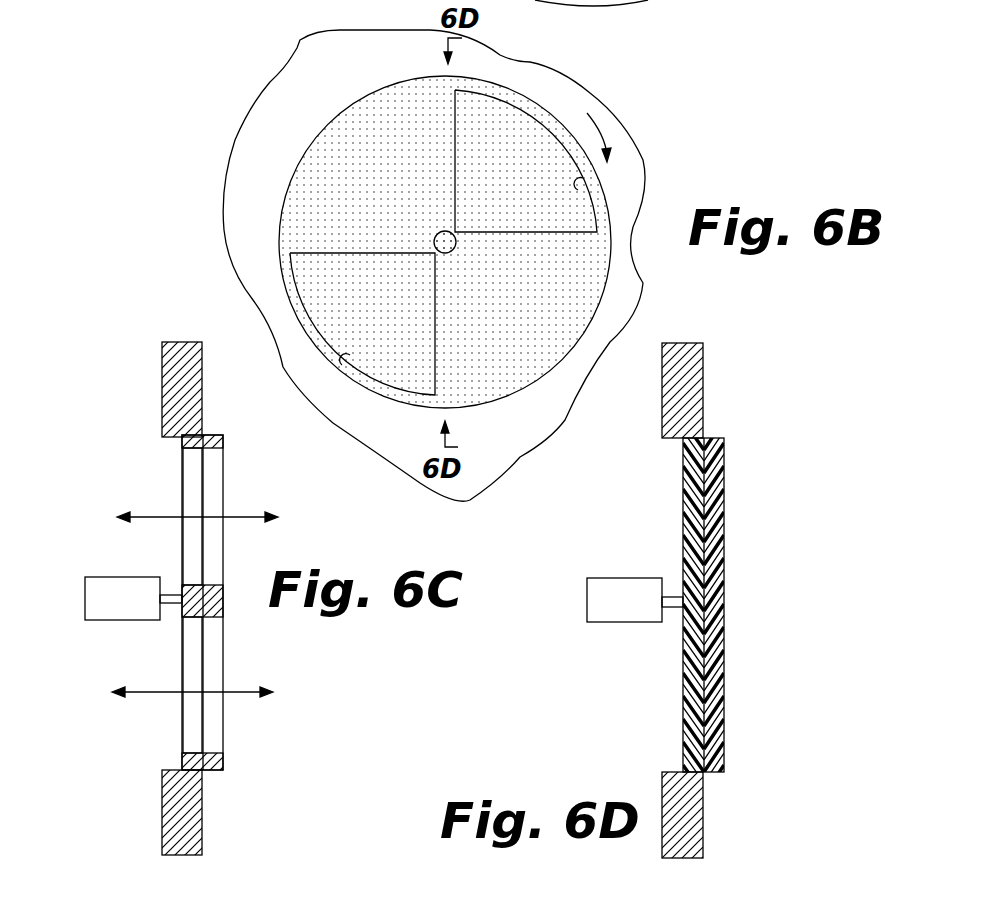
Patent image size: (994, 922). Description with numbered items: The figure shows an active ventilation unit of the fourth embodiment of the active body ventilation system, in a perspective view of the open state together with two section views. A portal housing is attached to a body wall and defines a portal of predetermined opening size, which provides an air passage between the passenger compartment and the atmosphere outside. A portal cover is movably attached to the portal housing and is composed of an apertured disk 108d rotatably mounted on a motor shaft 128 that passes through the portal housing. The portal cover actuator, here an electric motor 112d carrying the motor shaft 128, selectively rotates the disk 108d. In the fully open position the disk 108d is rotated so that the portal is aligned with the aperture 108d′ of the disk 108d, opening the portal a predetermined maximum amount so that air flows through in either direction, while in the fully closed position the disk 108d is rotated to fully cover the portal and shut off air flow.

In FIG. 6B, the apertured disk 108d is at (527, 348).
In FIG. 6C, the apertured disk 108d is at (225, 487).
In FIG. 6D, the apertured disk 108d is at (725, 705).
In FIG. 6B, the aperture 108d′ is at (584, 183).
In FIG. 6C, the aperture 108d′ is at (212, 536).
In FIG. 6C, the electric motor 112d is at (85, 588).
In FIG. 6D, the electric motor 112d is at (622, 578).
In FIG. 6C, the motor shaft 128 is at (178, 592).
In FIG. 6D, the motor shaft 128 is at (673, 610).